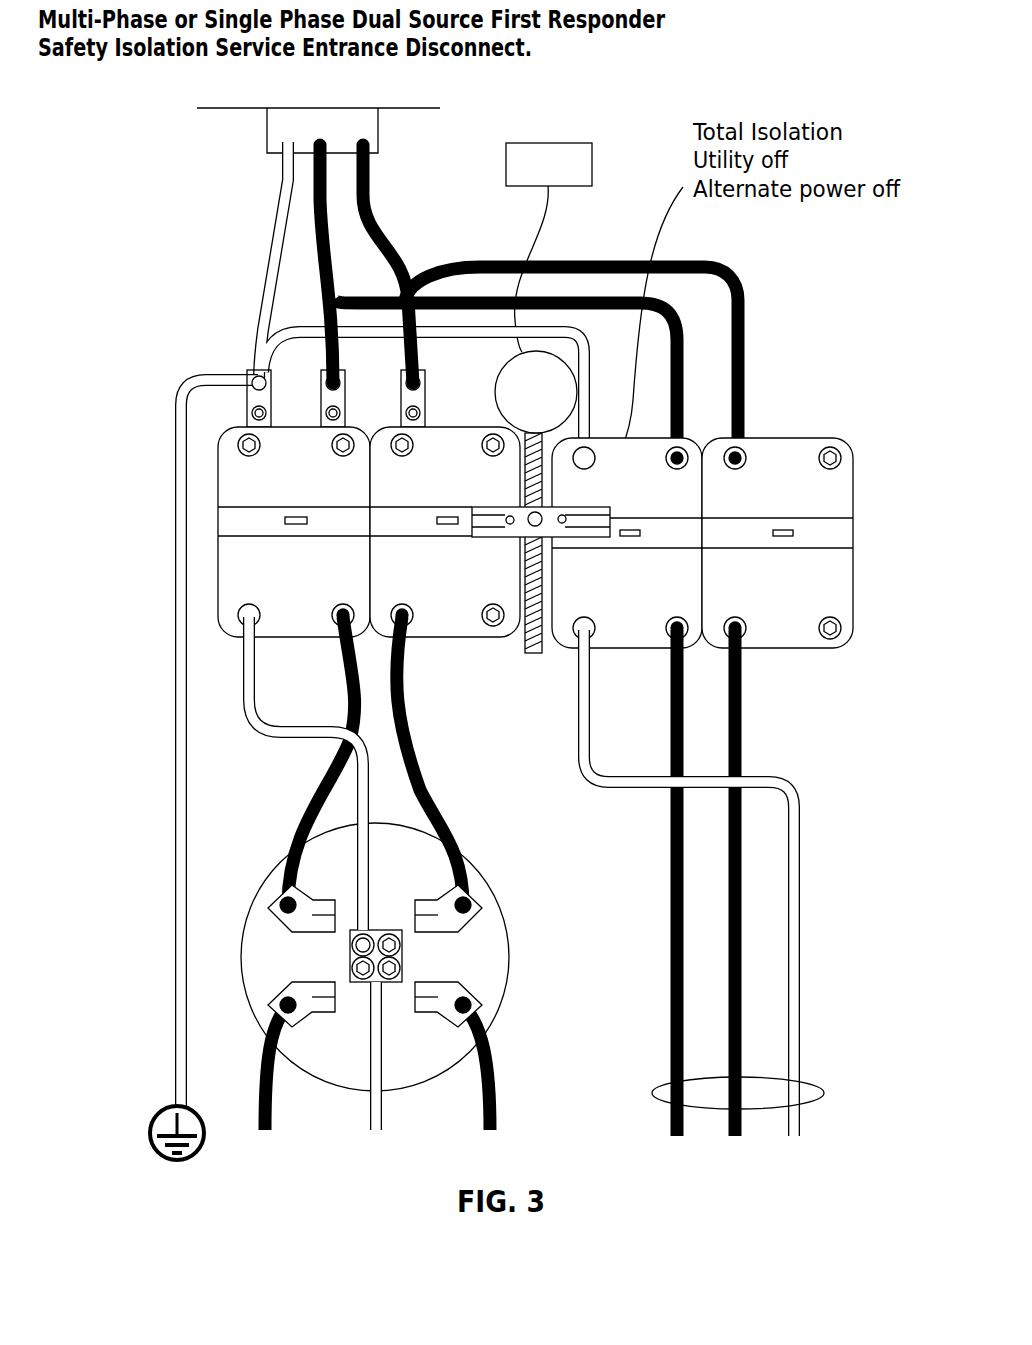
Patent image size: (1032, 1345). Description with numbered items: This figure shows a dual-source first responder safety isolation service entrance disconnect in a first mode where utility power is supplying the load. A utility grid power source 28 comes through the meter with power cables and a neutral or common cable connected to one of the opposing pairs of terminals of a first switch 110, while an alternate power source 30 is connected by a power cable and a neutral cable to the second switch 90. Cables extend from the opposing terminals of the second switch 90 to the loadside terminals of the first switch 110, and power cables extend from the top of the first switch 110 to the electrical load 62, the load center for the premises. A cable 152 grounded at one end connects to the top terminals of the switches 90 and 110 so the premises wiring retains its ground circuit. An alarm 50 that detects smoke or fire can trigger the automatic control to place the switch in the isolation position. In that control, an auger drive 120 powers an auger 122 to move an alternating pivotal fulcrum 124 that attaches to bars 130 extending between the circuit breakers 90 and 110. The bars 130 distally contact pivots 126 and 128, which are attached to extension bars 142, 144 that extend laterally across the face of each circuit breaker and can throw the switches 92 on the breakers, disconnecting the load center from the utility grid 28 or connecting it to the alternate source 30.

The utility grid power source 28 is at (340, 1073).
The alternate power source 30 is at (816, 1093).
The alarm 50 is at (560, 143).
The electrical load 62 is at (334, 139).
The second switch 90 is at (639, 596).
The switches 92 is at (785, 528).
The first switch 110 is at (315, 584).
The auger drive 120 is at (536, 392).
The auger 122 is at (525, 650).
The alternating pivotal fulcrum 124 is at (563, 522).
The pivot 126 is at (540, 522).
The pivot 128 is at (507, 515).
The bars 130 is at (487, 537).
The extension bar 142 is at (270, 532).
The extension bar 144 is at (420, 532).
The cable 152 is at (172, 1022).